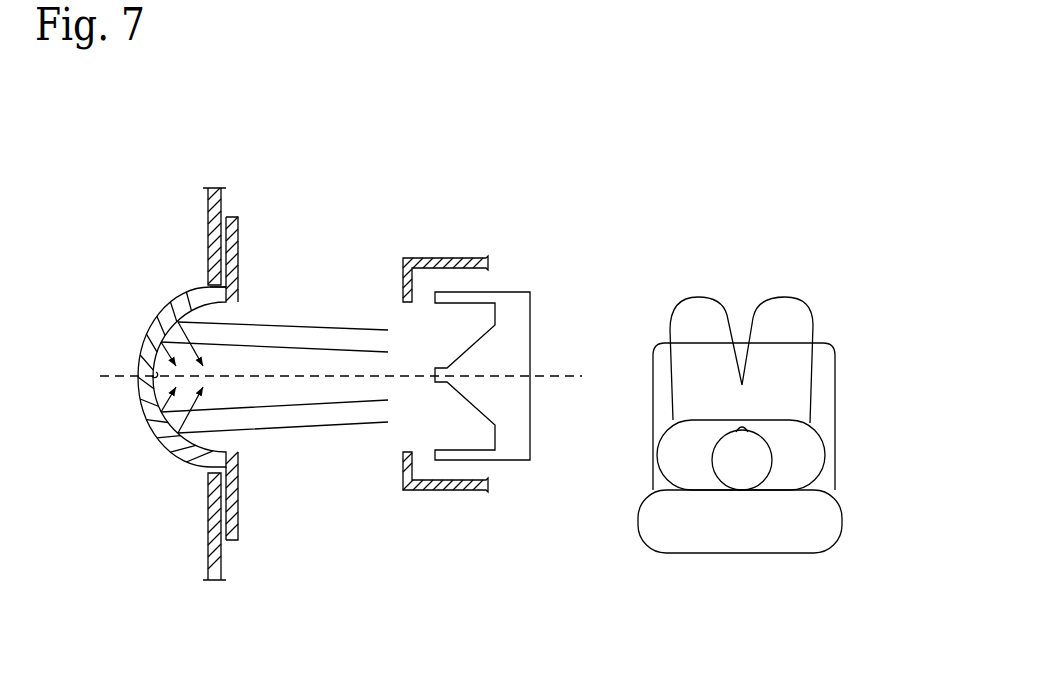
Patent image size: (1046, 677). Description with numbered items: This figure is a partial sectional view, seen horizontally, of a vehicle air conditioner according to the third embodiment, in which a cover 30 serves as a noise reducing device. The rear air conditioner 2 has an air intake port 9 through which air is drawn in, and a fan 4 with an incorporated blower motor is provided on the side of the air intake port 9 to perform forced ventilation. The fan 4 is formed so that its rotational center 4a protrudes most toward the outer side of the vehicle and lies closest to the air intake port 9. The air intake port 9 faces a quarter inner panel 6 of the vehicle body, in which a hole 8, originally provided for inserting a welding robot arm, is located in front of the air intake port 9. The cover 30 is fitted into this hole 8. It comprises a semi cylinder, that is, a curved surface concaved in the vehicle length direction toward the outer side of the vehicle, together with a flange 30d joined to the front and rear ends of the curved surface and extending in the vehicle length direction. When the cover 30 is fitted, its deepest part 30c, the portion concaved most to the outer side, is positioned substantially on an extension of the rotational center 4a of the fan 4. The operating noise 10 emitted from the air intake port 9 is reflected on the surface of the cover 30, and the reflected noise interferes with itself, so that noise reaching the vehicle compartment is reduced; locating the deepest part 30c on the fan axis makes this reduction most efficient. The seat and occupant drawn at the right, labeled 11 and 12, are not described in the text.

The rear air conditioner 2 is at (463, 337).
The fan 4 is at (520, 330).
The rotational center of the fan 4a is at (565, 378).
The quarter inner panel 6 is at (218, 203).
The hole 8 is at (208, 285).
The air intake port 9 is at (402, 305).
The operating noise 10 is at (323, 326).
The seat 11 is at (837, 427).
The occupant 12 is at (790, 378).
The cover 30 is at (167, 450).
The deepest part 30c is at (152, 376).
The flange 30d is at (237, 250).